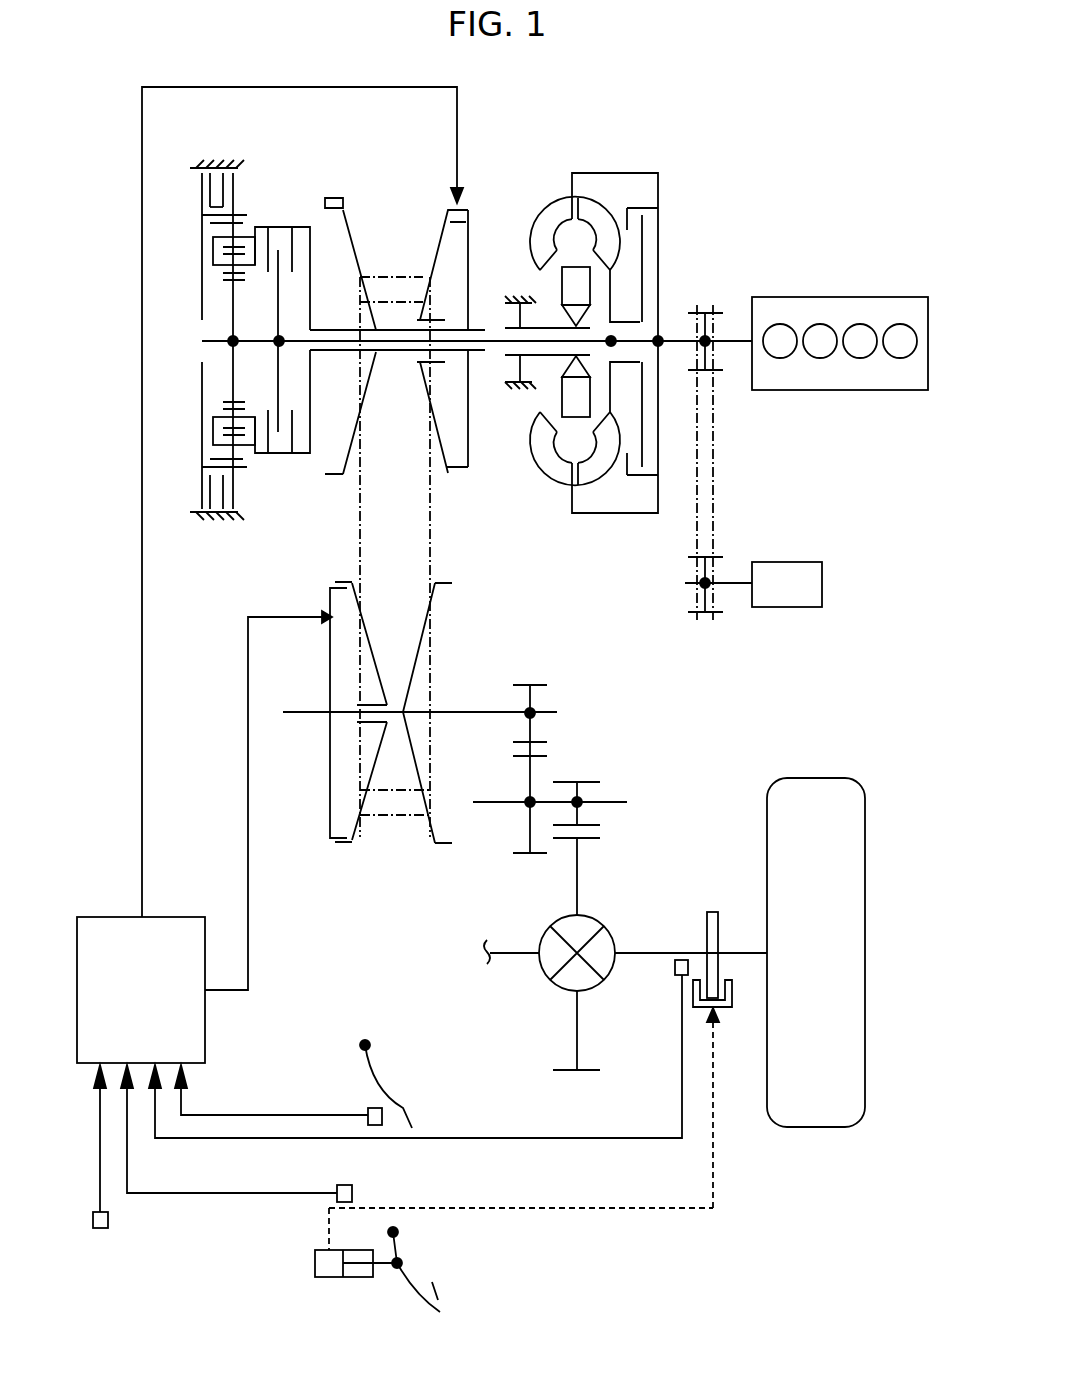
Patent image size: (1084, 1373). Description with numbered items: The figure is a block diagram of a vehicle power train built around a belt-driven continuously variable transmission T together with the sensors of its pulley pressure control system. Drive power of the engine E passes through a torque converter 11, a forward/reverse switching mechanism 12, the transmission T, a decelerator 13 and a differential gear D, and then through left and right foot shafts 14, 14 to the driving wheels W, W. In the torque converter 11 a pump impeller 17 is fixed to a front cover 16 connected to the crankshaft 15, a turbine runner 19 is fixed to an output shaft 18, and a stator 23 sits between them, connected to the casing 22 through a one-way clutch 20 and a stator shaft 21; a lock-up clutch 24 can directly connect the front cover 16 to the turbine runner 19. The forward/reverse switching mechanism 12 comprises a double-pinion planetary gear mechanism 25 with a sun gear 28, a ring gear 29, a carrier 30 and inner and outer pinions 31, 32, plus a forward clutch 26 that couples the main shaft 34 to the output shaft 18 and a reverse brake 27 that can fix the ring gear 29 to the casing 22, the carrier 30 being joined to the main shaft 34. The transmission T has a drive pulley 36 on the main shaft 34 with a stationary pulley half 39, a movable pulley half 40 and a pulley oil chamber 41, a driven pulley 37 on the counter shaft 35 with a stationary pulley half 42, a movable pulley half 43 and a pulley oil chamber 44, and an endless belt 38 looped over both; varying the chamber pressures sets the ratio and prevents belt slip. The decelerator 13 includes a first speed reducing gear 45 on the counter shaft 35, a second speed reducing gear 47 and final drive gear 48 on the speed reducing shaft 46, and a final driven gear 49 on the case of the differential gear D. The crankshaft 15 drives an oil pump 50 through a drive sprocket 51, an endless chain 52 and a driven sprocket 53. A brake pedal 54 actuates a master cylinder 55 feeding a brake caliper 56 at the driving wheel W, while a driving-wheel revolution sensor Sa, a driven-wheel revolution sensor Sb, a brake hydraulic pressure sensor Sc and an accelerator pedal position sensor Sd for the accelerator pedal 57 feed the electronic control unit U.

The torque converter 11 is at (574, 160).
The forward/reverse switching mechanism 12 is at (247, 487).
The decelerator 13 is at (608, 718).
The foot shaft 14 is at (500, 955).
The crankshaft 15 is at (735, 336).
The front cover 16 is at (660, 245).
The pump impeller 17 is at (545, 226).
The output shaft 18 is at (389, 348).
The turbine runner 19 is at (598, 212).
The one-way clutch 20 is at (564, 312).
The stator shaft 21 is at (560, 352).
The casing 22 is at (213, 165).
The stator 23 is at (576, 282).
The lock-up clutch 24 is at (634, 203).
The double-pinion planetary gear mechanism 25 is at (215, 285).
The forward clutch 26 is at (288, 222).
The reverse brake 27 is at (211, 520).
The sun gear 28 is at (247, 282).
The ring gear 29 is at (245, 215).
The carrier 30 is at (213, 250).
The inner pinions 31 is at (223, 276).
The outer pinions 32 is at (212, 223).
The main shaft 34 is at (333, 328).
The counter shaft 35 is at (297, 713).
The drive pulley 36 is at (436, 163).
The driven pulley 37 is at (350, 904).
The endless belt 38 is at (430, 535).
The stationary pulley half 39 is at (352, 232).
The movable pulley half 40 is at (436, 228).
The pulley oil chamber 41 is at (462, 262).
The stationary pulley half 42 is at (432, 845).
The movable pulley half 43 is at (355, 845).
The pulley oil chamber 44 is at (340, 806).
The first speed reducing gear 45 is at (540, 683).
The speed reducing shaft 46 is at (485, 803).
The second speed reducing gear 47 is at (525, 854).
The final drive gear 48 is at (596, 781).
The final driven gear 49 is at (594, 839).
The oil pump 50 is at (773, 598).
The drive sprocket 51 is at (694, 310).
The endless chain 52 is at (713, 435).
The driven sprocket 53 is at (700, 614).
The brake pedal 54 is at (438, 1292).
The master cylinder 55 is at (315, 1256).
The brake caliper 56 is at (728, 1000).
The accelerator pedal 57 is at (410, 1105).
The engine E is at (880, 297).
The electronic control unit U is at (131, 1003).
The belt-driven continuously variable transmission T is at (447, 558).
The differential gear D is at (604, 985).
The driving wheel W is at (817, 1128).
The driving-wheel revolution sensor Sa is at (675, 968).
The driven-wheel revolution sensor Sb is at (101, 1228).
The brake hydraulic pressure sensor Sc is at (348, 1185).
The accelerator pedal position sensor Sd is at (370, 1108).